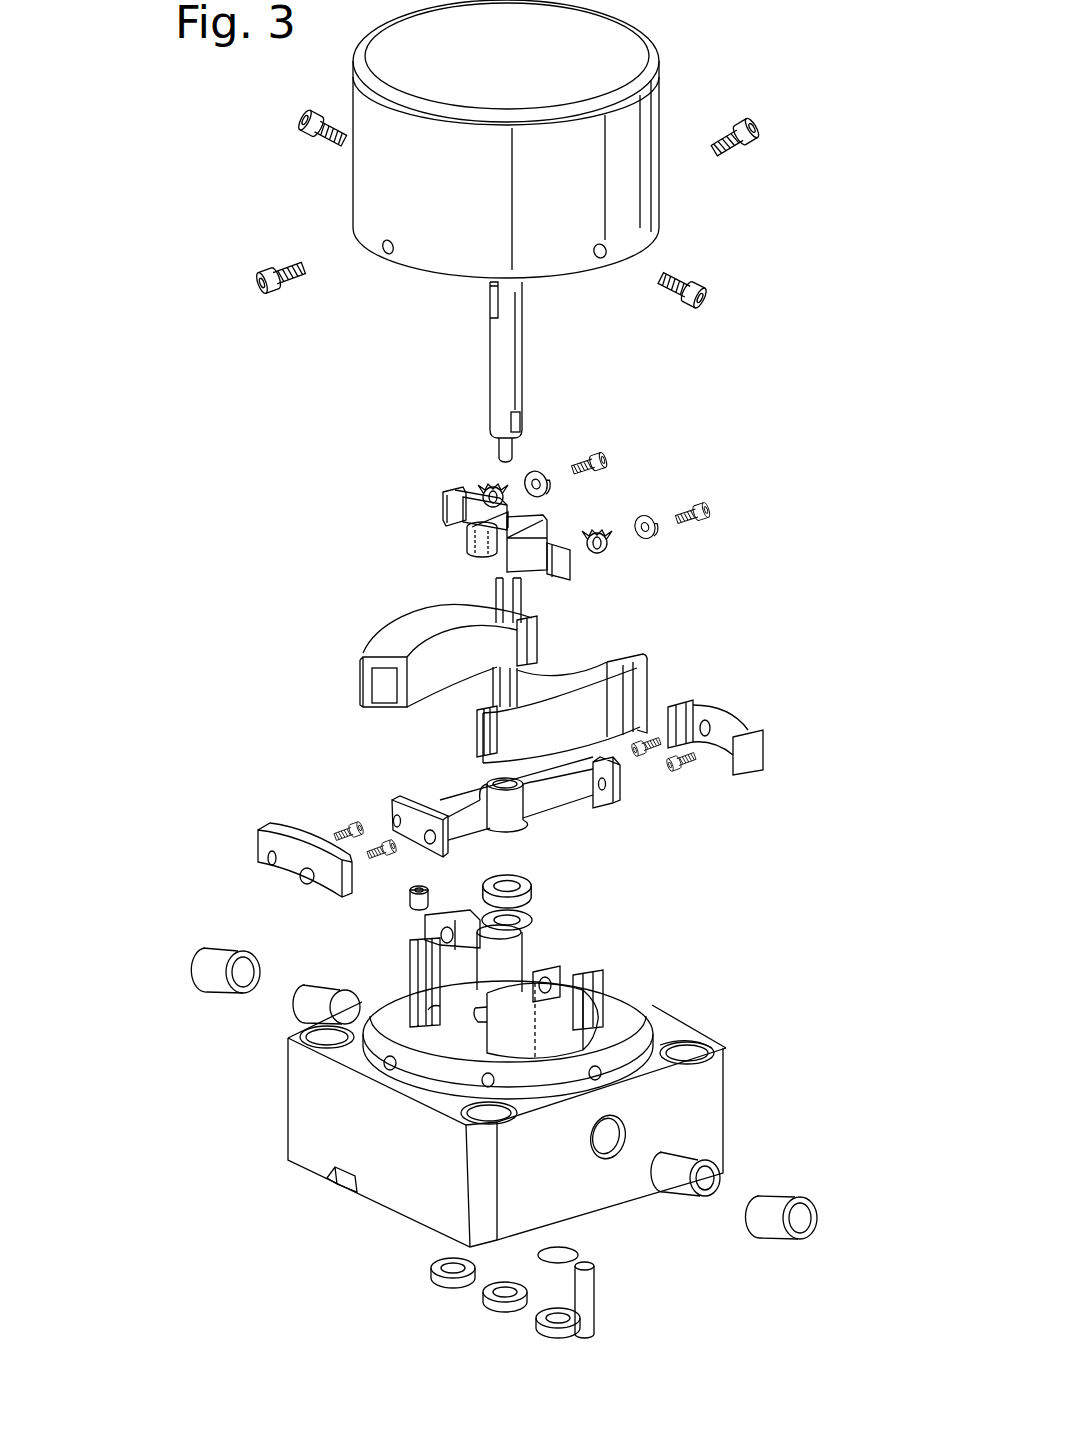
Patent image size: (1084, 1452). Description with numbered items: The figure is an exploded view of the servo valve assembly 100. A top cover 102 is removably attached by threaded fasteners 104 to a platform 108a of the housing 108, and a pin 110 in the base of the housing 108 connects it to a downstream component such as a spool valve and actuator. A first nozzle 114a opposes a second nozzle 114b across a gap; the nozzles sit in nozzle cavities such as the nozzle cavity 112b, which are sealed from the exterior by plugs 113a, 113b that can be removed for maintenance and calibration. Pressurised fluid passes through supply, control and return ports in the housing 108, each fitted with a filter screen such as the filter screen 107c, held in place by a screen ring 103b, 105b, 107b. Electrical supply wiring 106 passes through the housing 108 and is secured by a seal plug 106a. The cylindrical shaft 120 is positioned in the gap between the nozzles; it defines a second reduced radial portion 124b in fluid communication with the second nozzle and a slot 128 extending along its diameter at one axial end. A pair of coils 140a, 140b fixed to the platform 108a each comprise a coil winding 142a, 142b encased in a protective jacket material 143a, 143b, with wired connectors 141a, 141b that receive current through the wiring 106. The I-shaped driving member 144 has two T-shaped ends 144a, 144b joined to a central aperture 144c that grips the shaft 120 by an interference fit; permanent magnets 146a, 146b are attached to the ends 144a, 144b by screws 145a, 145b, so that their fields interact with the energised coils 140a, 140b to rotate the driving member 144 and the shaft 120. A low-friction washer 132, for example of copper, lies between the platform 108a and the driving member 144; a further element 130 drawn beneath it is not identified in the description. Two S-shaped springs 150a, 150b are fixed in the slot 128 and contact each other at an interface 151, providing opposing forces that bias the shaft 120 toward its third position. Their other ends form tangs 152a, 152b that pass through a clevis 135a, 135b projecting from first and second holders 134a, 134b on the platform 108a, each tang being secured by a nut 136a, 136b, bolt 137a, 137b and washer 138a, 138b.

The servo valve assembly 100 is at (186, 512).
The top cover 102 is at (632, 180).
The threaded fasteners 104 is at (298, 120).
The electrical supply wiring 106 is at (428, 1012).
The seal plug 106a is at (418, 903).
The screen ring 103b is at (440, 1272).
The screen ring 105b is at (490, 1302).
The screen ring 107b is at (552, 1332).
The filter screen 107c is at (572, 1258).
The housing 108 is at (298, 1136).
The platform 108a is at (688, 1045).
The pin 110 is at (592, 1280).
The nozzle cavity 112b is at (622, 1137).
The plug 113a is at (200, 970).
The plug 113b is at (805, 1220).
The first nozzle 114a is at (305, 1012).
The second nozzle 114b is at (690, 1158).
The shaft 120 is at (512, 342).
The second reduced radial portion 124b is at (520, 425).
The slot 128 is at (489, 294).
The washer 130 is at (530, 918).
The washer 132 is at (522, 882).
The first holder 134a is at (515, 960).
The second holder 134b is at (592, 1012).
The clevis 135a is at (450, 926).
The clevis 135b is at (560, 992).
The nut 136a is at (545, 478).
The nut 136b is at (648, 517).
The bolt 137a is at (612, 452).
The bolt 137b is at (718, 510).
The washer 138a is at (488, 483).
The washer 138b is at (606, 545).
The coil 140a is at (400, 633).
The coil 140b is at (660, 693).
The wired connector 141a is at (495, 600).
The wired connector 141b is at (492, 690).
The coil winding 142a is at (540, 638).
The coil winding 142b is at (480, 753).
The protective jacket material 143a is at (362, 680).
The protective jacket material 143b is at (640, 662).
The driving member 144 is at (432, 800).
The T-shaped end 144a is at (428, 840).
The T-shaped end 144b is at (620, 790).
The central aperture 144c is at (505, 795).
The screws 145a is at (350, 826).
The screws 145b is at (692, 765).
The permanent magnet 146a is at (258, 847).
The permanent magnet 146b is at (765, 752).
The spring 150a is at (445, 510).
The spring 150b is at (548, 585).
The interface 151 is at (475, 538).
The tang 152a is at (445, 492).
The tang 152b is at (560, 572).